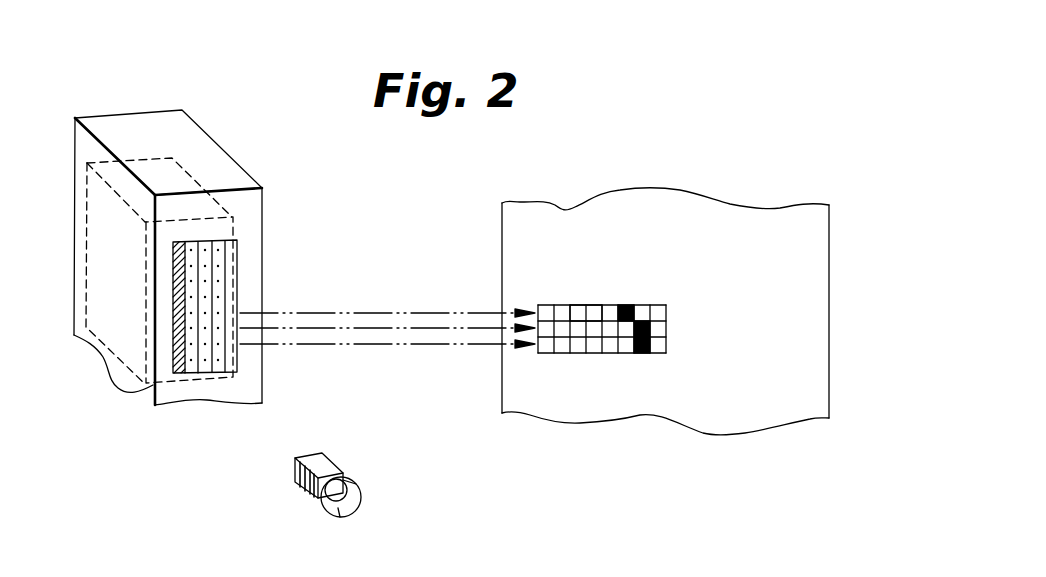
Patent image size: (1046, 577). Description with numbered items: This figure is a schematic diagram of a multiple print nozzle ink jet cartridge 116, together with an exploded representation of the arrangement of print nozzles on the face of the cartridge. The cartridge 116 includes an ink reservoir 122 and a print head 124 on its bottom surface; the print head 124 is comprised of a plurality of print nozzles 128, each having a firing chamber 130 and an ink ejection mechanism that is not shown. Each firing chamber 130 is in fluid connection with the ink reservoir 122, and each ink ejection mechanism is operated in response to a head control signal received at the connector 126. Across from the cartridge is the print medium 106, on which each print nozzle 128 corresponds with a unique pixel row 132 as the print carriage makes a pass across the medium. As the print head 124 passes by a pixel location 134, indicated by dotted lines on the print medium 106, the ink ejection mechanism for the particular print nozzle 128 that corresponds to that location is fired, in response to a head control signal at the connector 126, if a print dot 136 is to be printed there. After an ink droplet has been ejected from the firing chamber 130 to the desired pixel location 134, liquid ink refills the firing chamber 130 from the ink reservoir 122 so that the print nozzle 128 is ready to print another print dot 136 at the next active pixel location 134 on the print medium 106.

The print medium 106 is at (830, 257).
The multiple print nozzle ink jet cartridge 116 is at (118, 88).
The ink reservoir 122 is at (177, 163).
The print head 124 is at (228, 378).
The connector 126 is at (176, 363).
The print nozzle 128 is at (228, 343).
The firing chamber 130 is at (320, 452).
The pixel row 132 is at (670, 305).
The pixel location 134 is at (625, 305).
The print dot 136 is at (632, 305).